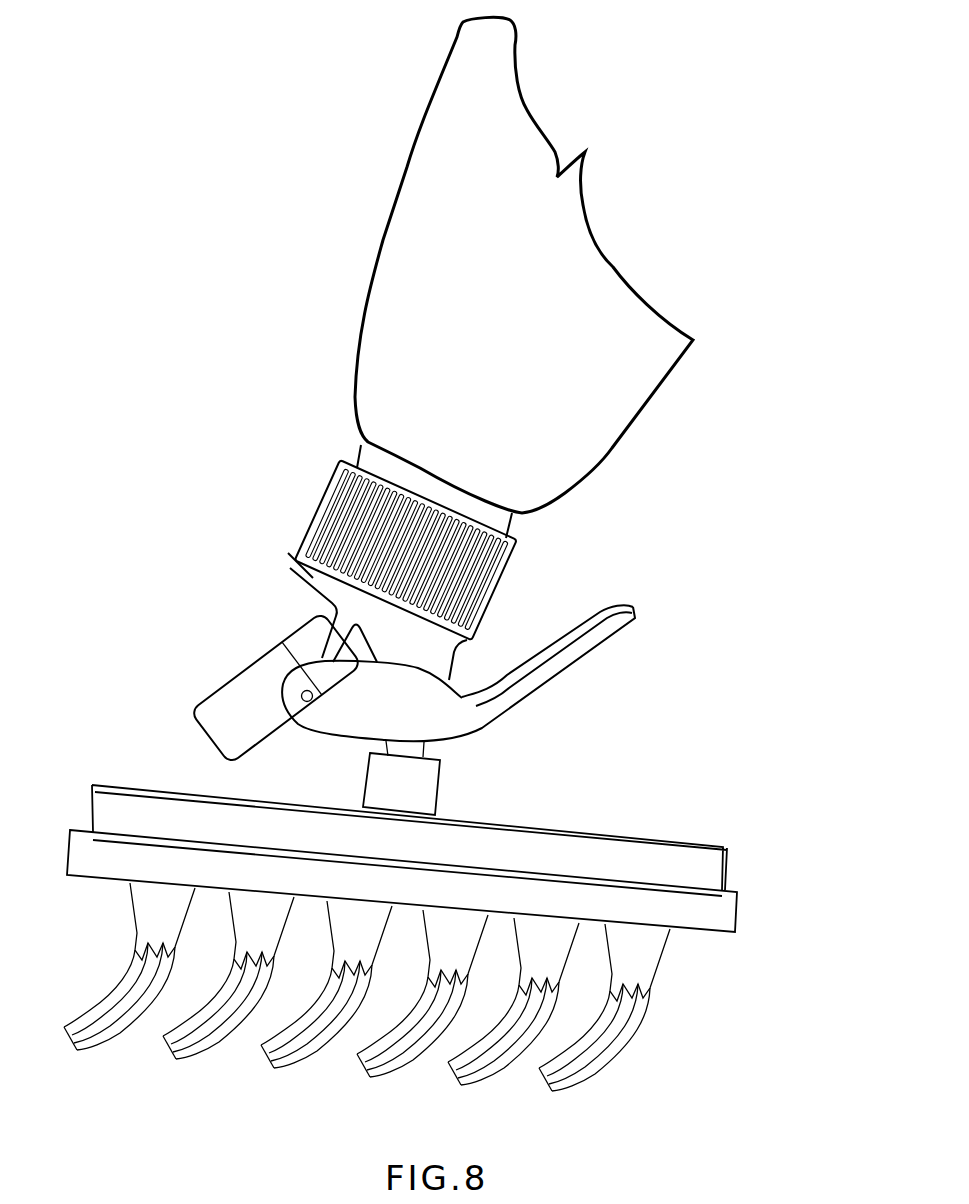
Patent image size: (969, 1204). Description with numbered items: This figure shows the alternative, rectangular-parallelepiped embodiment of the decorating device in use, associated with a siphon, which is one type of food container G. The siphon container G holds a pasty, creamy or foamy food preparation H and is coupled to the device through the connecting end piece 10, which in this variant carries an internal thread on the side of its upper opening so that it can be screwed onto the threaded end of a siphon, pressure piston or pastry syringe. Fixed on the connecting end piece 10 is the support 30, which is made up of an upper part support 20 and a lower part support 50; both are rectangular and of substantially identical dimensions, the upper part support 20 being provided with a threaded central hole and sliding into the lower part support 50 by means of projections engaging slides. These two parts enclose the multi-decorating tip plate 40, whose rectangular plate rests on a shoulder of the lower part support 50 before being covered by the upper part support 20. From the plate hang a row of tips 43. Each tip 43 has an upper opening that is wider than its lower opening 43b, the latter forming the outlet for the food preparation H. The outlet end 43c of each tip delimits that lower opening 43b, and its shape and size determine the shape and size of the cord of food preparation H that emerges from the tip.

The container G is at (661, 414).
The food preparation H is at (533, 453).
The connecting end piece 10 is at (473, 785).
The upper part support 20 is at (763, 868).
The support 30 is at (492, 866).
The multi-decorating tip plate 40 is at (389, 987).
The tip 43 is at (400, 987).
The lower opening 43b is at (628, 1037).
The outlet end 43c is at (123, 928).
The lower part support 50 is at (838, 855).